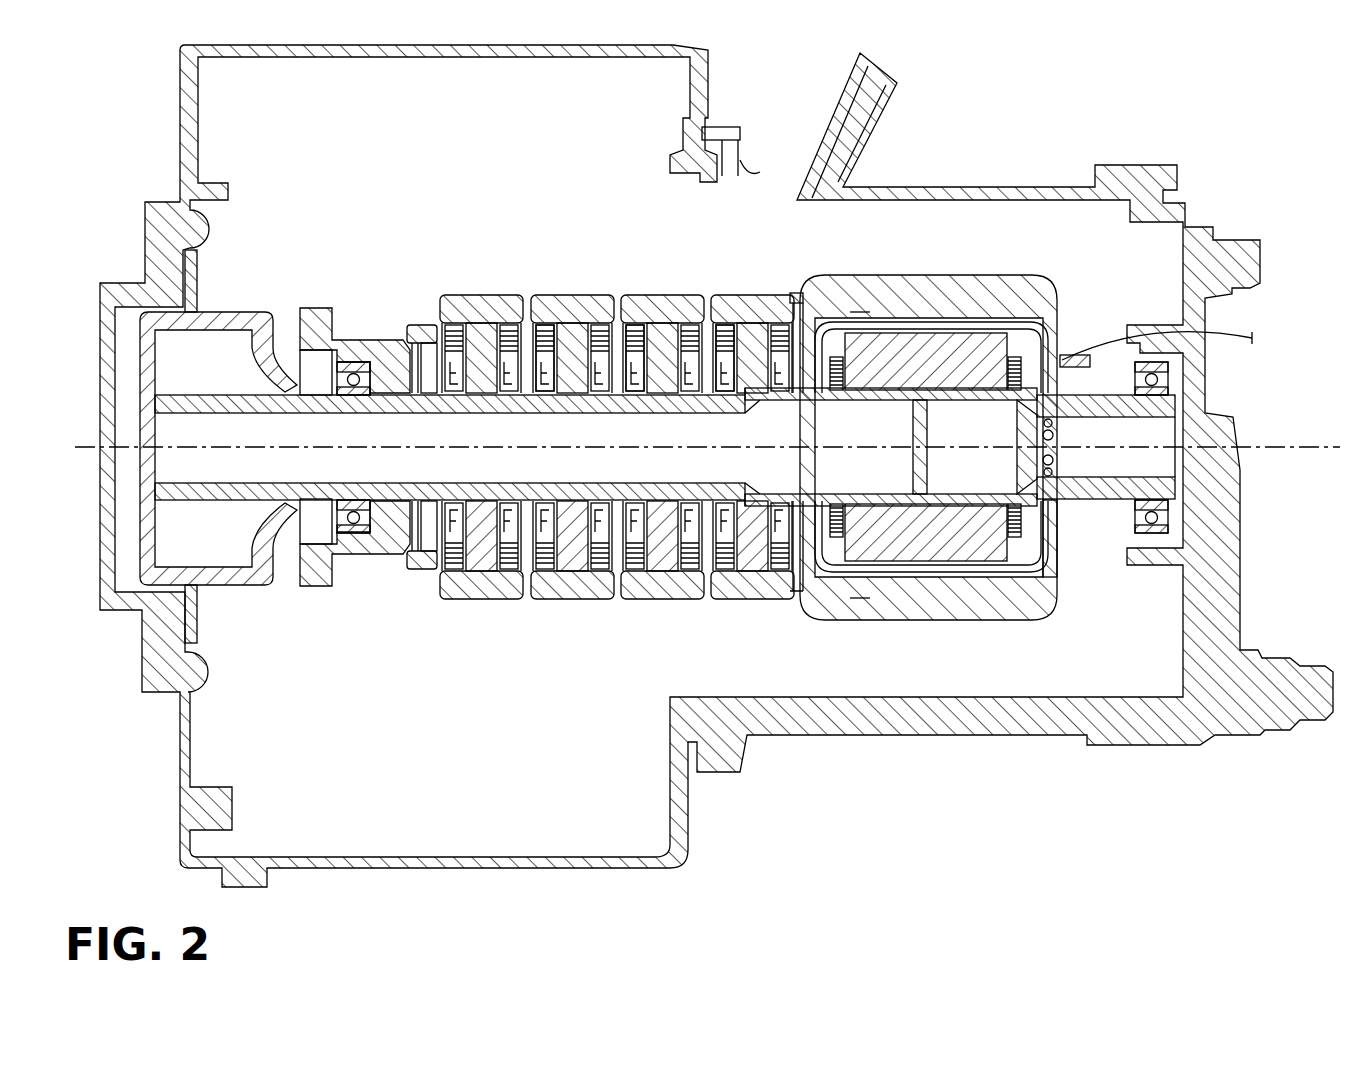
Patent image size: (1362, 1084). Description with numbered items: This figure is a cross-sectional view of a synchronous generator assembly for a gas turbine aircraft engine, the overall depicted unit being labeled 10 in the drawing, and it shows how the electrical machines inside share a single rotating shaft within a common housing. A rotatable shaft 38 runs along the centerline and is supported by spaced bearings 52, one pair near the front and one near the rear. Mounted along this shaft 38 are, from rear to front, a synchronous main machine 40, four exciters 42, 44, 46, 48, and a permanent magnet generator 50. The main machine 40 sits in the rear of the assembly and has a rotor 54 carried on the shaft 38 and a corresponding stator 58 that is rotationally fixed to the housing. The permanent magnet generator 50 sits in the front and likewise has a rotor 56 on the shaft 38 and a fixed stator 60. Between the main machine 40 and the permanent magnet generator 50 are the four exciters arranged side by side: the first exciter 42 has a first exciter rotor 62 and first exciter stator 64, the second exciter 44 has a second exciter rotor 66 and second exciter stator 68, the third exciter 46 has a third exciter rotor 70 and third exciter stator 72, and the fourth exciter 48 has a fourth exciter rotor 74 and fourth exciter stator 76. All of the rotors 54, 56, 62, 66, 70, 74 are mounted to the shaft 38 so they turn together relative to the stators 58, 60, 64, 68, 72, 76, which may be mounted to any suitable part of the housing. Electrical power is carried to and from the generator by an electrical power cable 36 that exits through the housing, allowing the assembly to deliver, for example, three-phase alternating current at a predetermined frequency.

The electric machine housing 10 is at (1004, 90).
The electrical power cable 36 is at (1062, 356).
The rotatable shaft 38 is at (207, 480).
The synchronous main machine 40 is at (1058, 521).
The first exciter 42 is at (530, 330).
The second exciter 44 is at (615, 330).
The third exciter 46 is at (704, 330).
The fourth exciter 48 is at (800, 324).
The permanent magnet generator 50 is at (367, 548).
The bearings 52 is at (350, 518).
The rotor 54 is at (968, 336).
The rotor 56 is at (410, 360).
The stator 58 is at (980, 606).
The stator 60 is at (417, 563).
The first exciter rotor 62 is at (488, 572).
The first exciter stator 64 is at (472, 296).
The second exciter rotor 66 is at (575, 572).
The second exciter stator 68 is at (562, 296).
The third exciter rotor 70 is at (667, 572).
The third exciter stator 72 is at (653, 296).
The fourth exciter rotor 74 is at (757, 572).
The fourth exciter stator 76 is at (743, 296).